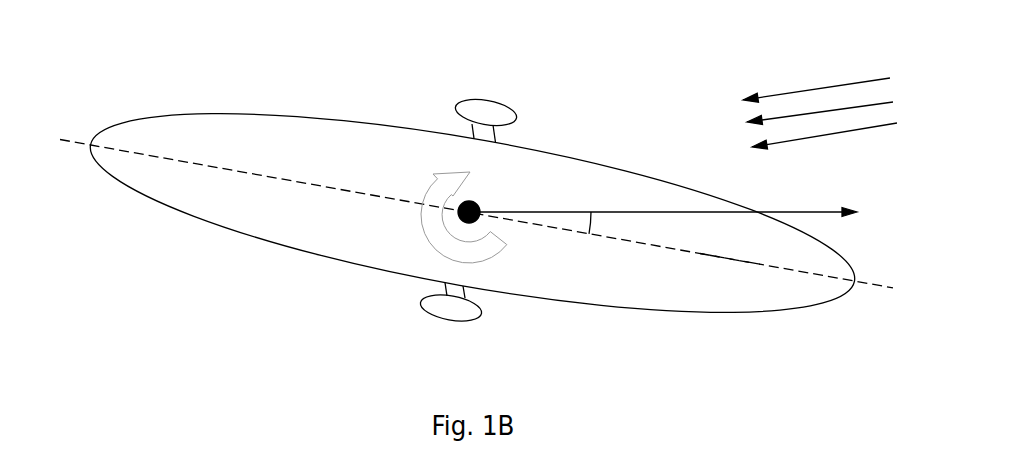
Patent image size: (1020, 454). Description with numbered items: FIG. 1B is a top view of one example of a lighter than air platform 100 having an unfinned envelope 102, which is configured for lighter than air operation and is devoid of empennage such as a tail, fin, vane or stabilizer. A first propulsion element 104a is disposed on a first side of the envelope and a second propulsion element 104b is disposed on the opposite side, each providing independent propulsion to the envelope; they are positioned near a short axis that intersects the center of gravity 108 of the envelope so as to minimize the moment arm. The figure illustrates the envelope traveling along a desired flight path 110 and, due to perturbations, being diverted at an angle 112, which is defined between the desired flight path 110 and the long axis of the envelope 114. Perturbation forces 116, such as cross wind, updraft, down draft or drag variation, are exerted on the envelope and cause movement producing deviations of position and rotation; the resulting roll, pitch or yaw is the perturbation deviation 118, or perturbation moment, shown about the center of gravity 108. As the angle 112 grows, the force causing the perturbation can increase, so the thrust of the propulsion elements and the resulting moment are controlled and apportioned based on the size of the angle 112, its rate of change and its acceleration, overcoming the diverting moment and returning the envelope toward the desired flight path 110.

The lighter than air platform 100 is at (663, 242).
The unfinned envelope 102 is at (119, 125).
The first propulsion element 104a is at (460, 105).
The second propulsion element 104b is at (420, 302).
The center of gravity 108 is at (481, 211).
The desired flight path 110 is at (770, 208).
The angle 112 is at (595, 212).
The long axis of the envelope 114 is at (730, 259).
The perturbation forces 116 is at (820, 88).
The perturbation deviation 118 is at (423, 193).